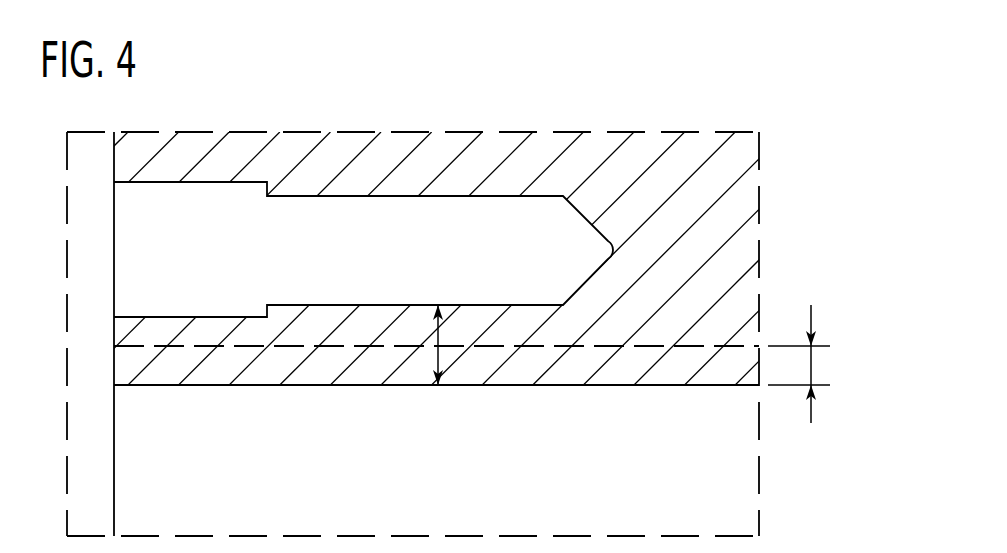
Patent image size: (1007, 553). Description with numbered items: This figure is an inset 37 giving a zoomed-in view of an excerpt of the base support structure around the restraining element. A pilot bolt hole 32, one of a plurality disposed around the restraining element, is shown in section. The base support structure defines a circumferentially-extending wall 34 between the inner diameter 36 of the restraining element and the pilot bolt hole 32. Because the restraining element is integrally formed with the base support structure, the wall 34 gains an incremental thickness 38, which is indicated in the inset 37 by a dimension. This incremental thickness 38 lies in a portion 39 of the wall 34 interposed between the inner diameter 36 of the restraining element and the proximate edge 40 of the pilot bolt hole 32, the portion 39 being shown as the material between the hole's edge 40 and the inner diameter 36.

The pilot bolt hole 32 is at (500, 265).
The circumferentially-extending wall 34 is at (268, 370).
The inner diameter 36 is at (565, 385).
The inset 37 is at (398, 147).
The incremental thickness 38 is at (812, 365).
The portion of the wall 39 is at (438, 358).
The proximate edge 40 is at (377, 305).